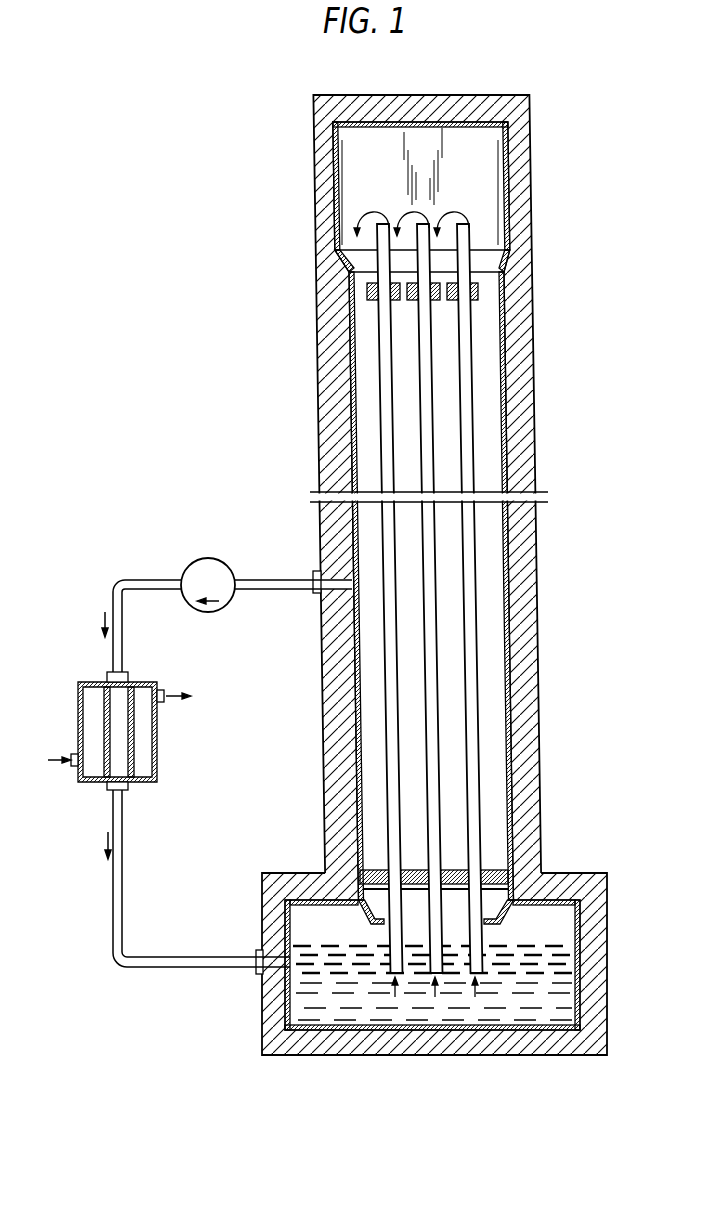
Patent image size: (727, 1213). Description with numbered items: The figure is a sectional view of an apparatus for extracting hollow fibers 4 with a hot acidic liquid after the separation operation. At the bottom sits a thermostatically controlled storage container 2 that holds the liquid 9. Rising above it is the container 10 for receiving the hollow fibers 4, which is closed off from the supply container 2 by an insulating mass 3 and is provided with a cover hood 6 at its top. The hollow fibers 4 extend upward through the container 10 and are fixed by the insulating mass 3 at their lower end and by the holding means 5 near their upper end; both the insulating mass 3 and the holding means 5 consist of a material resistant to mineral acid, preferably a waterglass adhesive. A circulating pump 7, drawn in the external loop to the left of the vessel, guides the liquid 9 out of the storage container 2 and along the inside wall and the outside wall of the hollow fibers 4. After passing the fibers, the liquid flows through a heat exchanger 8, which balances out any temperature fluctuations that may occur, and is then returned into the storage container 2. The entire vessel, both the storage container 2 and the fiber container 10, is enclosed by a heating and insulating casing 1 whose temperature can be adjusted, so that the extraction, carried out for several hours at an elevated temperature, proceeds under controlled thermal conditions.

The heating and insulating casing 1 is at (527, 405).
The storage container 2 is at (580, 925).
The insulating mass 3 is at (502, 878).
The hollow fibers 4 is at (473, 806).
The holding means 5 is at (485, 294).
The cover hood 6 is at (508, 192).
The circulating pump 7 is at (209, 558).
The heat exchanger 8 is at (93, 691).
The liquid 9 is at (568, 988).
The container for receiving the hollow fibers 10 is at (505, 546).